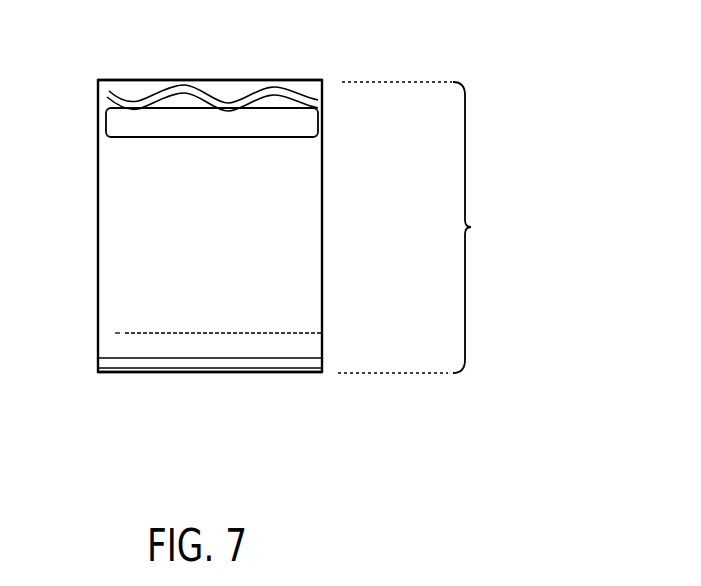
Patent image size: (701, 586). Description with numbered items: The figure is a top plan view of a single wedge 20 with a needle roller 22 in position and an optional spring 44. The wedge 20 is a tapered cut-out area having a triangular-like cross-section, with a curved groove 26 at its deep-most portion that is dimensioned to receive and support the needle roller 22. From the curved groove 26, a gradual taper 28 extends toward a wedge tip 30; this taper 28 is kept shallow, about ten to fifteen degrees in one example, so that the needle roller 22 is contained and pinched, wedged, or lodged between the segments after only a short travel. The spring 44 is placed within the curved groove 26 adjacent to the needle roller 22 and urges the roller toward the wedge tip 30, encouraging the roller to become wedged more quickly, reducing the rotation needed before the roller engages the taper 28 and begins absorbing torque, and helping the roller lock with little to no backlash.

The wedge 20 is at (413, 188).
The needle roller 22 is at (288, 124).
The curved groove 26 is at (218, 79).
The taper 28 is at (420, 227).
The wedge tip 30 is at (199, 372).
The spring 44 is at (290, 78).